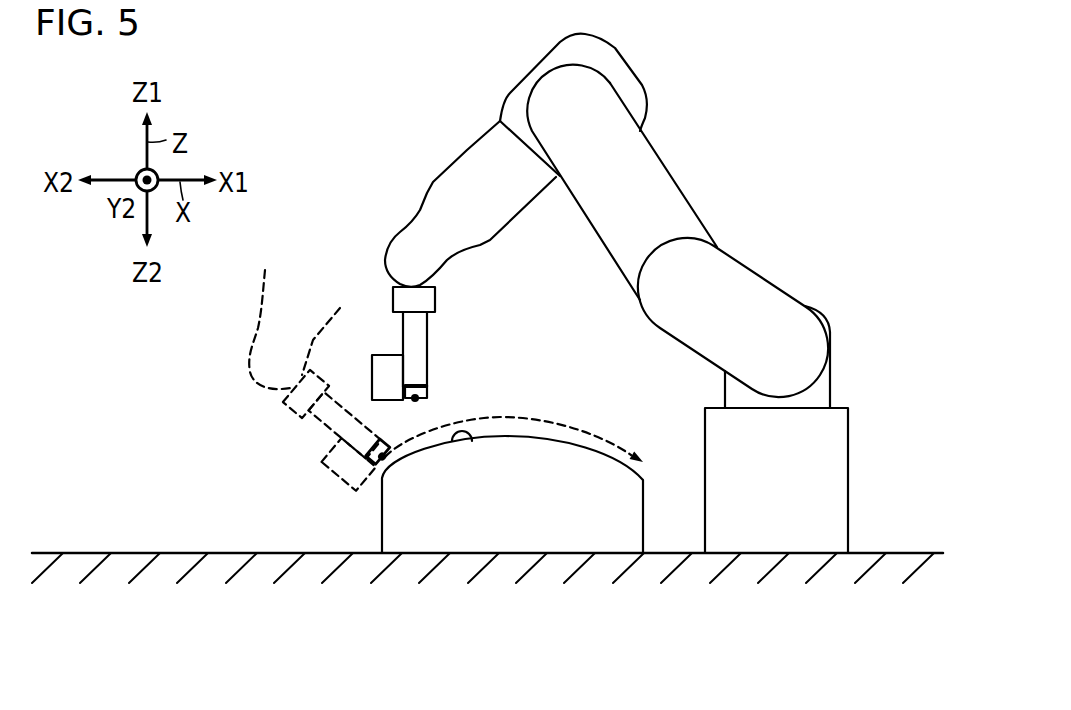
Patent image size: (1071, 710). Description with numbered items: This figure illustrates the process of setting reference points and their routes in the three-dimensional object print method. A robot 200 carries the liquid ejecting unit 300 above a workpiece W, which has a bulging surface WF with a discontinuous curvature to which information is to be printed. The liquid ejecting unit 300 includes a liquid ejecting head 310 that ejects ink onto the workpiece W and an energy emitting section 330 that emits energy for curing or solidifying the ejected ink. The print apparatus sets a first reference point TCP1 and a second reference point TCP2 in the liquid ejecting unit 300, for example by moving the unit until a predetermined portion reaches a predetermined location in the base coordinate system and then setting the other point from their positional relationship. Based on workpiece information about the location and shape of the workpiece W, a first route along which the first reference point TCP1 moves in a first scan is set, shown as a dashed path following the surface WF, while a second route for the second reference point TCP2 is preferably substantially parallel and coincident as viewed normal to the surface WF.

The robot 200 is at (676, 162).
The liquid ejecting unit 300 is at (381, 357).
The liquid ejecting head 310 is at (428, 386).
The energy emitting section 330 is at (378, 353).
The workpiece W is at (370, 538).
The surface WF is at (472, 442).
The first reference point TCP1 is at (420, 400).
The second reference point TCP2 is at (384, 403).